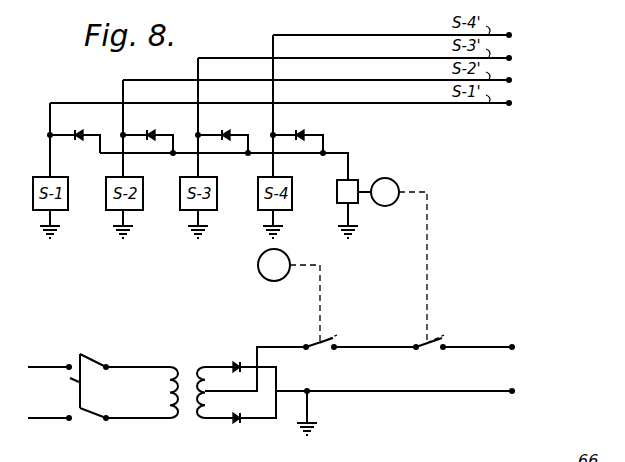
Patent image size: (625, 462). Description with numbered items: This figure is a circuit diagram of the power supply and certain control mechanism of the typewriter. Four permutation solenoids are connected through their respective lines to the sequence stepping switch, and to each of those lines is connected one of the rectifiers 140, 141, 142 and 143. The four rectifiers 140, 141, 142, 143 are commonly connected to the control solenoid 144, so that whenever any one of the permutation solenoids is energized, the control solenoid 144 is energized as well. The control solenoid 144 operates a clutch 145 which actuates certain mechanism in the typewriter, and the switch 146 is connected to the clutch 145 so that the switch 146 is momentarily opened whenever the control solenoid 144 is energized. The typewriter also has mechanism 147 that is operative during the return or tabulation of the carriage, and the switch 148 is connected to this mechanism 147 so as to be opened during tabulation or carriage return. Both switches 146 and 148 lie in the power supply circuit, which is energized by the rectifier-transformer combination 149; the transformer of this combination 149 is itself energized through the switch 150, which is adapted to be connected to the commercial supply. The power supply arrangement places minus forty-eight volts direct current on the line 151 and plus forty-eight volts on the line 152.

The rectifier 140 is at (78, 132).
The rectifier 141 is at (148, 132).
The rectifier 142 is at (224, 131).
The rectifier 143 is at (293, 130).
The control solenoid 144 is at (352, 180).
The clutch 145 is at (393, 184).
The switch 146 is at (432, 342).
The carriage return and tabulation mechanism 147 is at (258, 264).
The switch 148 is at (306, 344).
The rectifier-transformer combination 149 is at (196, 419).
The switch 150 is at (88, 412).
The line 151 is at (516, 347).
The line 152 is at (514, 392).